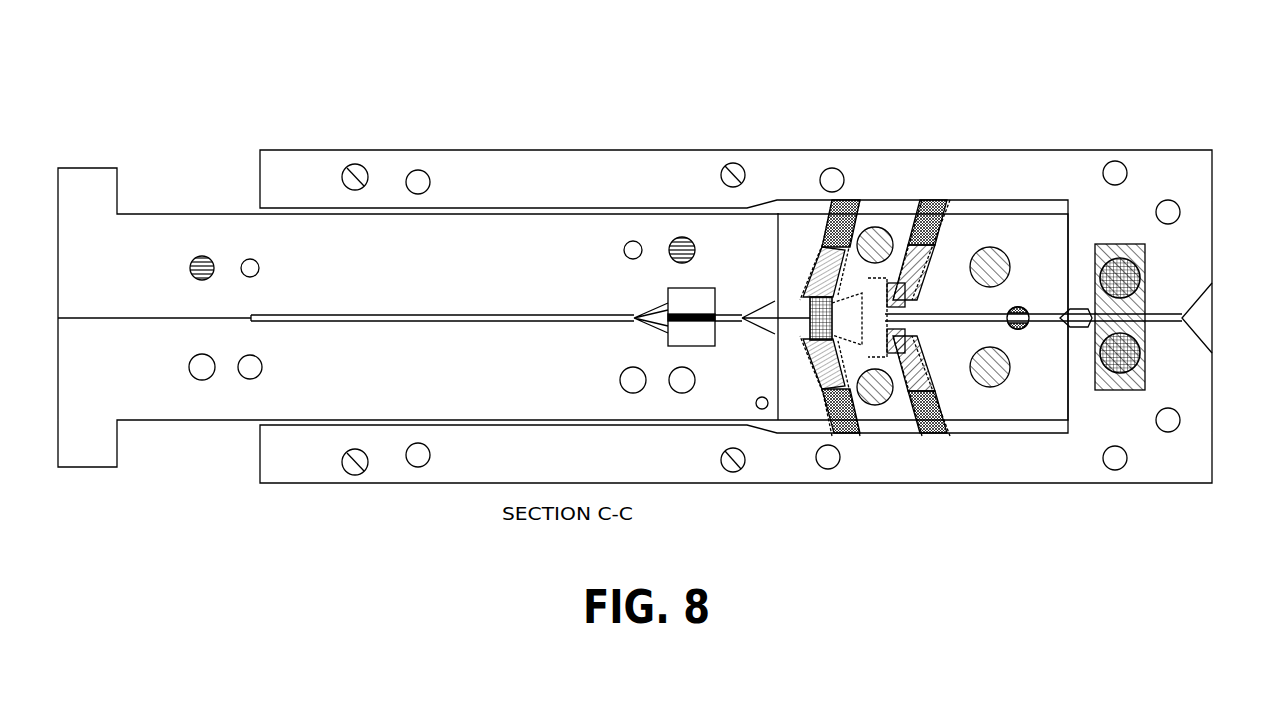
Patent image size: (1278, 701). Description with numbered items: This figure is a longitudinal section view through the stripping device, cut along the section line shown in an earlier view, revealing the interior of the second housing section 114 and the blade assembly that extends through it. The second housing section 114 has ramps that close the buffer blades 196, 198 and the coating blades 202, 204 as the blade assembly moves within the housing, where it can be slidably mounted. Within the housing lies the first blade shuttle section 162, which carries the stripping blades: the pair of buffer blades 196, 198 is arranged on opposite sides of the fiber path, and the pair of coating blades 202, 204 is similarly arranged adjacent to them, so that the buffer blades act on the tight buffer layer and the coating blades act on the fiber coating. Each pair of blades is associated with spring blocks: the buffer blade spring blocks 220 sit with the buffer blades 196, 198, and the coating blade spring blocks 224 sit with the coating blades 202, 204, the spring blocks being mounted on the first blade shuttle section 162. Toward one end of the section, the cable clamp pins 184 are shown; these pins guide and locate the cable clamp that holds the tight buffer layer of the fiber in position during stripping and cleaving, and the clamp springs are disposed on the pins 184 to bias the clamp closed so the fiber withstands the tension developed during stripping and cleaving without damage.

The second housing section 114 is at (623, 157).
The first blade shuttle section 162 is at (307, 392).
The cable clamp pins 184 is at (1137, 367).
The buffer blade 196 is at (818, 258).
The buffer blade 198 is at (820, 370).
The coating blade 202 is at (930, 245).
The coating blade 204 is at (915, 385).
The buffer blade spring blocks 220 is at (837, 215).
The coating blade spring blocks 224 is at (933, 222).